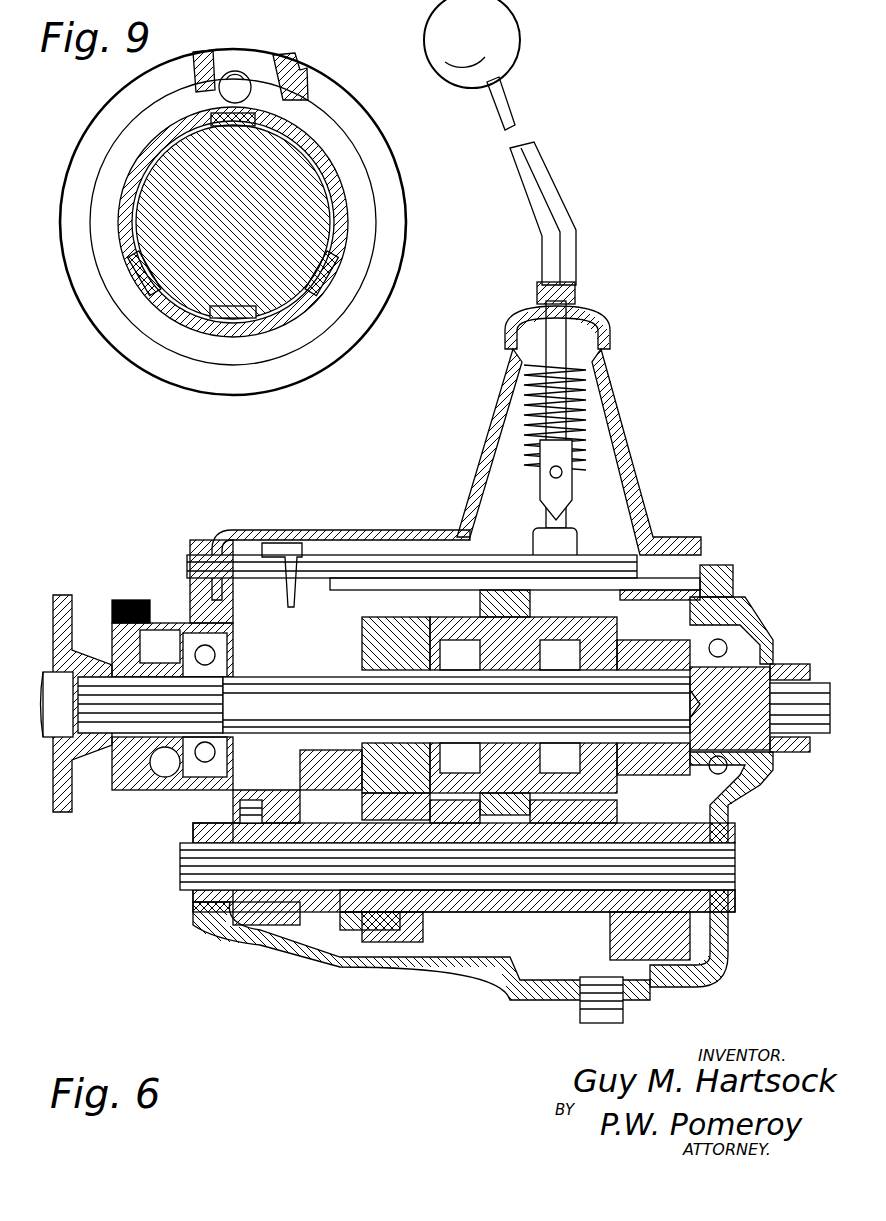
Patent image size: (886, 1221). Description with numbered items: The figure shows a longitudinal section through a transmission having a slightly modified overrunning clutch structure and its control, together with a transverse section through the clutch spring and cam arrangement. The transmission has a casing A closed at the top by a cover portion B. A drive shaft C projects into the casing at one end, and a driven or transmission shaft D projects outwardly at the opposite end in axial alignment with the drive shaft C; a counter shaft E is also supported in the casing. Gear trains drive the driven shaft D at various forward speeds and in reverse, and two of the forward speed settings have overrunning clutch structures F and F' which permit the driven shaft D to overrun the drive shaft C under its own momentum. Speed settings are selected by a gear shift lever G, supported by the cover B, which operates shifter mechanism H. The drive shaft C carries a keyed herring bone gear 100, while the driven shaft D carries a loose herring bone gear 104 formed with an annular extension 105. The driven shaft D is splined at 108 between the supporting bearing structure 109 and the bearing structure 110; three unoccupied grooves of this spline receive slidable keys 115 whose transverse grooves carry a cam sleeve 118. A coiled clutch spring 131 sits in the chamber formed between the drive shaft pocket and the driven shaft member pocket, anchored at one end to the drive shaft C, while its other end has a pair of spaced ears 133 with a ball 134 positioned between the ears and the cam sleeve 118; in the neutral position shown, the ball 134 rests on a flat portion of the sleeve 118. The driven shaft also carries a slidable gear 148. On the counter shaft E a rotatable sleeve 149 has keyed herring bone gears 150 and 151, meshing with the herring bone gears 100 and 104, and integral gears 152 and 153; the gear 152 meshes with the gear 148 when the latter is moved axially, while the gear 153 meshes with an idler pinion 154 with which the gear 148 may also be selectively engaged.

In FIG. 6, the herring bone gear 100 is at (633, 640).
In FIG. 6, the loose herring bone gear 104 is at (390, 630).
In FIG. 6, the annular extension 105 is at (438, 620).
In FIG. 9, the splined portion 108 is at (285, 302).
In FIG. 6, the splined portion 108 is at (456, 705).
In FIG. 6, the supporting bearing structure 109 is at (197, 623).
In FIG. 6, the bearing structure 110 is at (737, 818).
In FIG. 9, the slidable keys 115 is at (320, 262).
In FIG. 9, the cam sleeve 118 is at (342, 235).
In FIG. 9, the coiled clutch spring 131 is at (328, 355).
In FIG. 9, the spaced ears 133 is at (202, 82).
In FIG. 9, the ball 134 is at (235, 80).
In FIG. 6, the slidable gear 148 is at (325, 774).
In FIG. 6, the sleeve 149 is at (463, 898).
In FIG. 6, the herring bone gear 150 is at (645, 947).
In FIG. 6, the herring bone gear 151 is at (405, 940).
In FIG. 6, the gear 152 is at (348, 965).
In FIG. 6, the gear 153 is at (267, 907).
In FIG. 6, the idler pinion 154 is at (252, 812).
In FIG. 6, the casing A is at (267, 942).
In FIG. 6, the top closure or cover portion B is at (362, 528).
In FIG. 6, the drive shaft C is at (822, 735).
In FIG. 6, the driven or transmission shaft D is at (110, 723).
In FIG. 6, the counter shaft E is at (178, 868).
In FIG. 6, the overrunning clutch structure F is at (443, 539).
In FIG. 6, the overrunning clutch structure F' is at (650, 552).
In FIG. 6, the gear shift lever G is at (560, 188).
In FIG. 6, the shifter mechanism H is at (510, 538).